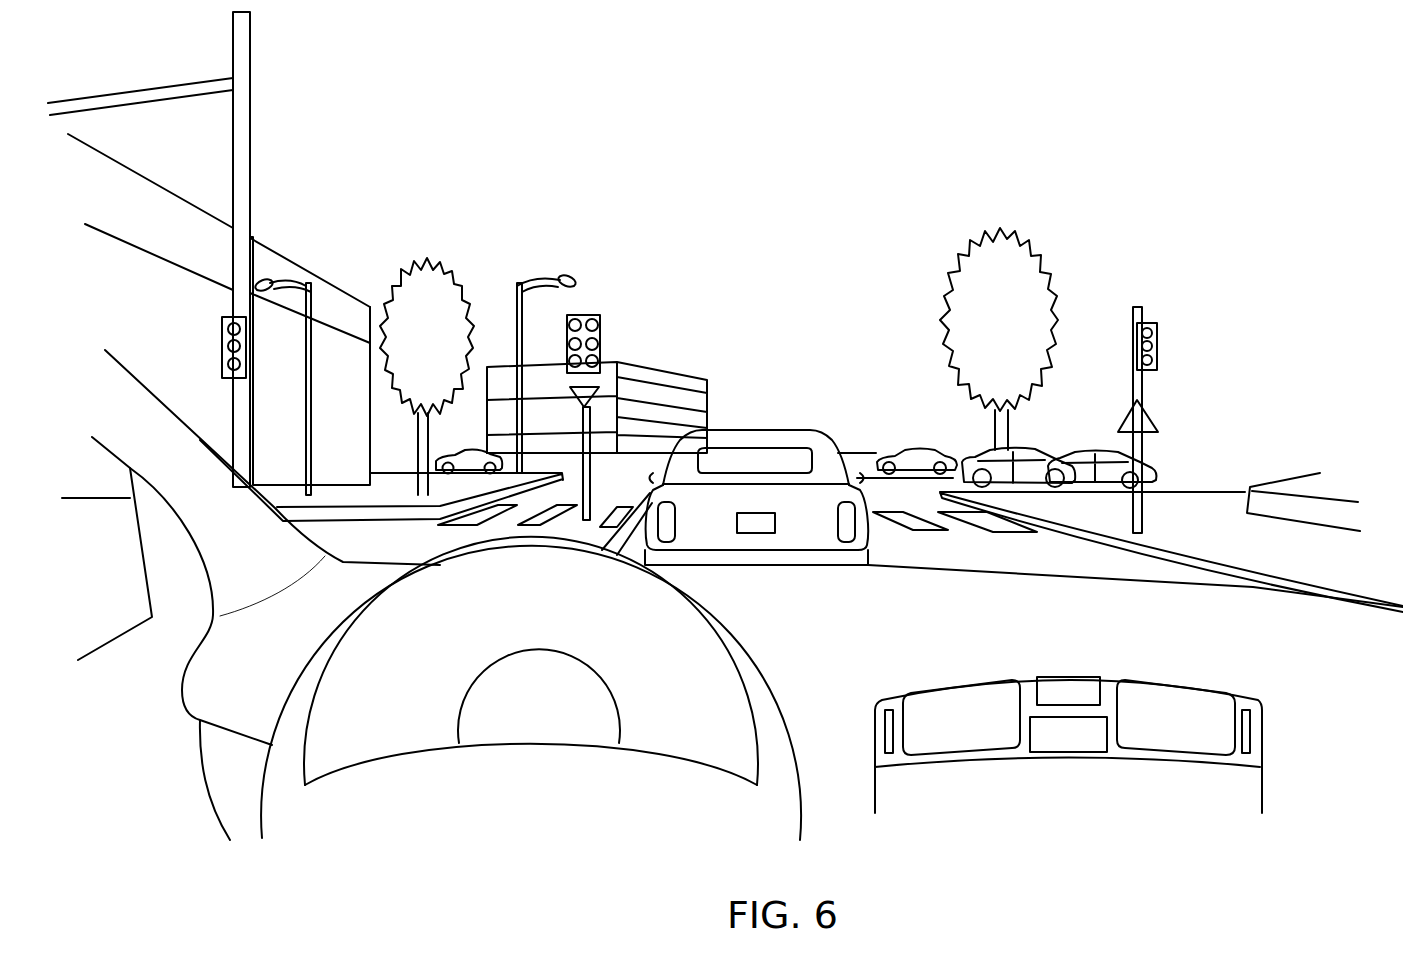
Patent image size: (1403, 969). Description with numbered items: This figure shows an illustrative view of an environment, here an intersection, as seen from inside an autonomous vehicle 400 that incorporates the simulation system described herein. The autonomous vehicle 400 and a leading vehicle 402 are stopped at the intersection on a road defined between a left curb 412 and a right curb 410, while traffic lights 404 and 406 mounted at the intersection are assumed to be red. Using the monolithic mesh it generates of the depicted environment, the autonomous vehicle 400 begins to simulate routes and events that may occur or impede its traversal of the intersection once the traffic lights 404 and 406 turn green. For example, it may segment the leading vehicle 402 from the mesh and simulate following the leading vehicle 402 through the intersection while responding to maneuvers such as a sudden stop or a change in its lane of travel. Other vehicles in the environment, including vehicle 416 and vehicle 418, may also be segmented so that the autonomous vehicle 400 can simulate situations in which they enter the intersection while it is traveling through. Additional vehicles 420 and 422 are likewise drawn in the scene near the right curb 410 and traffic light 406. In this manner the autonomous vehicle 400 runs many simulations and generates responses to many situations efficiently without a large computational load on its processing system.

The autonomous vehicle 400 is at (877, 646).
The leading vehicle 402 is at (760, 427).
The traffic light 404 is at (600, 333).
The traffic light 406 is at (1157, 345).
The right curb 410 is at (1150, 550).
The left curb 412 is at (626, 530).
The vehicle 416 is at (470, 452).
The vehicle 418 is at (913, 448).
The vehicle 420 is at (975, 450).
The vehicle 422 is at (1093, 450).